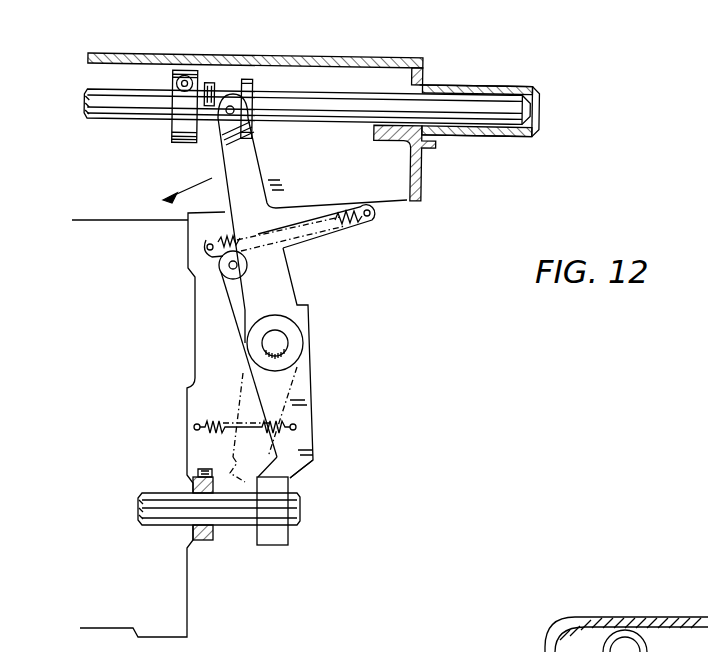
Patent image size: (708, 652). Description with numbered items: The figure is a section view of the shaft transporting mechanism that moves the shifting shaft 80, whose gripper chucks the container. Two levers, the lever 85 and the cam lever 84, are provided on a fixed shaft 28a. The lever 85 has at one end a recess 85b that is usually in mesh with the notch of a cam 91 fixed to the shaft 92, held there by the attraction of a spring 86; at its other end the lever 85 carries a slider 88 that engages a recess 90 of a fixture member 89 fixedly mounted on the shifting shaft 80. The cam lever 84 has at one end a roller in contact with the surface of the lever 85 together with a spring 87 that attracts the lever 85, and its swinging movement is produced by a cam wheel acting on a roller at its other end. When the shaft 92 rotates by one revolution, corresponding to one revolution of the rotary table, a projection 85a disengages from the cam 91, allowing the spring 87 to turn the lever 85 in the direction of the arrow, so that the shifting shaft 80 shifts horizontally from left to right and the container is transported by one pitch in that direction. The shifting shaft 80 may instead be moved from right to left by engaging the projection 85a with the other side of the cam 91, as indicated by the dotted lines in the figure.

The shifting shaft 80 is at (340, 100).
The fixture member 89 is at (187, 76).
The recess 90 is at (228, 90).
The slider 88 is at (227, 122).
The lever 85 is at (270, 272).
The projection 85a is at (303, 455).
The recess 85b is at (290, 478).
The spring 87 is at (345, 205).
The cam lever 84 is at (238, 300).
The fixed shaft 28a is at (287, 343).
The spring 86 is at (213, 420).
The shaft 92 is at (297, 510).
The cam 91 is at (277, 490).